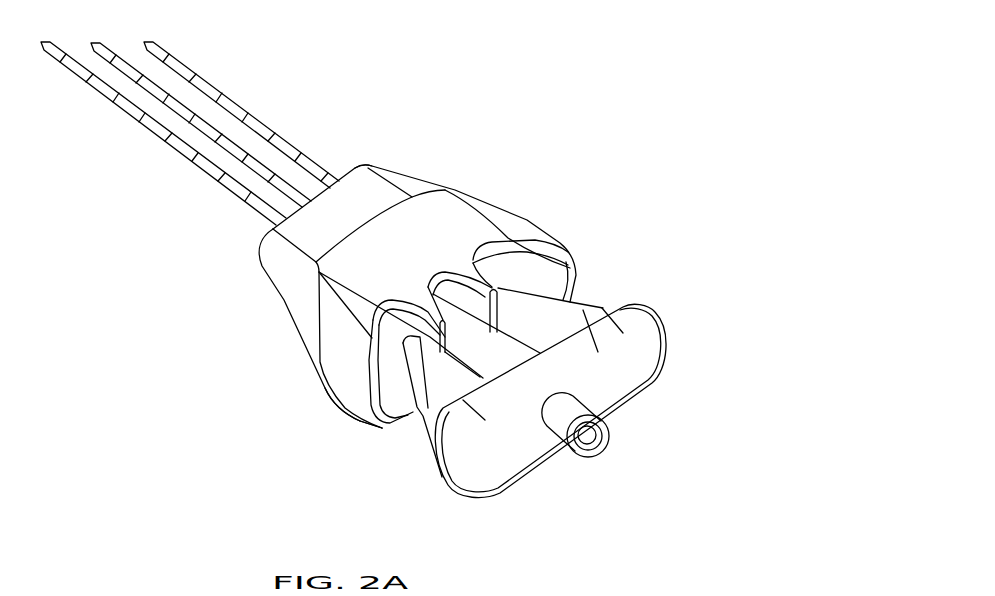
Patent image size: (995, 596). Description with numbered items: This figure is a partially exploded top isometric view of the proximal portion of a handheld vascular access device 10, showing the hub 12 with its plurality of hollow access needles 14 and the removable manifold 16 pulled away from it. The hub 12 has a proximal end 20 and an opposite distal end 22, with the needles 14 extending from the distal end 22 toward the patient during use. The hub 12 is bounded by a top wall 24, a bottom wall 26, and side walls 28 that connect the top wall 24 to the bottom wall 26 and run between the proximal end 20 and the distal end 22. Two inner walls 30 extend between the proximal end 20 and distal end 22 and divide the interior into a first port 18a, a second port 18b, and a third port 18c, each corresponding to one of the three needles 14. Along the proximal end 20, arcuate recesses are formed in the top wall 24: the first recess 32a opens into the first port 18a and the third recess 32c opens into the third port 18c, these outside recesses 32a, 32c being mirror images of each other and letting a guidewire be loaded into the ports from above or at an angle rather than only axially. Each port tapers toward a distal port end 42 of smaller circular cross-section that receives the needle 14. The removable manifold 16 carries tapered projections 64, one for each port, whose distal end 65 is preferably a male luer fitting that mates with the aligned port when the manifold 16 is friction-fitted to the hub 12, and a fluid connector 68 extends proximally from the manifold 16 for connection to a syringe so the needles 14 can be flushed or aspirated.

The handheld vascular access device 10 is at (246, 362).
The hub 12 is at (447, 203).
The hollow access needles 14 is at (118, 40).
The removable manifold 16 is at (663, 343).
The first port 18a is at (387, 377).
The second port 18b is at (433, 294).
The third port 18c is at (523, 260).
The proximal end 20 is at (382, 425).
The distal end 22 is at (349, 161).
The top wall 24 is at (397, 222).
The bottom wall 26 is at (370, 413).
The side walls 28 is at (527, 220).
The inner walls 30 is at (503, 286).
The first recess 32a is at (319, 271).
The third recess 32c is at (488, 247).
The distal port end 42 is at (564, 283).
The projections 64 is at (513, 360).
The distal end of projection 65 is at (391, 338).
The fluid connector 68 is at (588, 450).